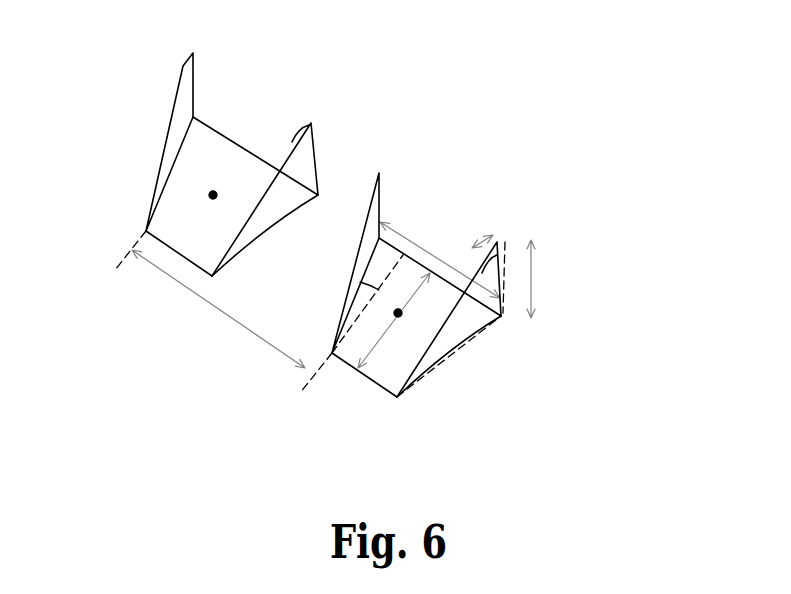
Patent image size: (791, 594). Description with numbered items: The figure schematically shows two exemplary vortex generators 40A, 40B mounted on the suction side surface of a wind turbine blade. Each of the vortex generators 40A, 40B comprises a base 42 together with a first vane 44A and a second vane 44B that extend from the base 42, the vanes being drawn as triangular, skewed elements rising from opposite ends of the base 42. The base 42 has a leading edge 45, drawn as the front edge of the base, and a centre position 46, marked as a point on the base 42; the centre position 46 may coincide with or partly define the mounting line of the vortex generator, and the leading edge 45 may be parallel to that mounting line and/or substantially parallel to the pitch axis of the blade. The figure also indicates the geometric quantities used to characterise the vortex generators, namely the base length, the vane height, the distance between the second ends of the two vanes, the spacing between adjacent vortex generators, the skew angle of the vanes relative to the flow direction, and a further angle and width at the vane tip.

The vortex generator 40A is at (208, 100).
The vortex generator 40B is at (417, 217).
The base 42 is at (223, 150).
The first vane 44A is at (311, 123).
The second vane 44B is at (176, 103).
The leading edge 45 is at (187, 258).
The centre position 46 is at (213, 195).